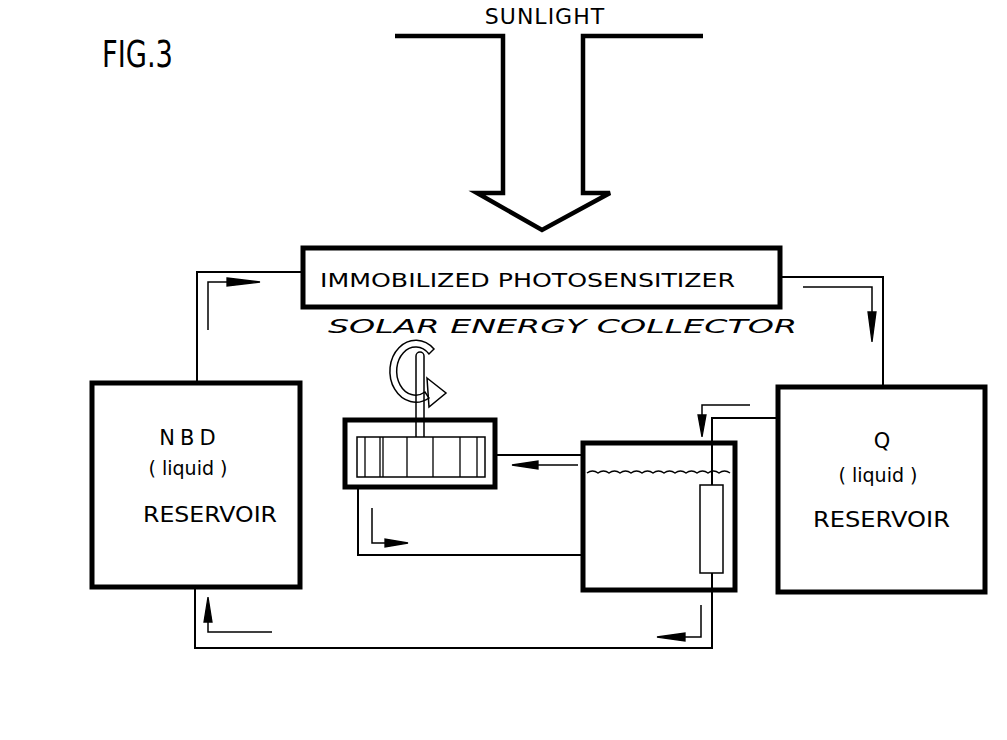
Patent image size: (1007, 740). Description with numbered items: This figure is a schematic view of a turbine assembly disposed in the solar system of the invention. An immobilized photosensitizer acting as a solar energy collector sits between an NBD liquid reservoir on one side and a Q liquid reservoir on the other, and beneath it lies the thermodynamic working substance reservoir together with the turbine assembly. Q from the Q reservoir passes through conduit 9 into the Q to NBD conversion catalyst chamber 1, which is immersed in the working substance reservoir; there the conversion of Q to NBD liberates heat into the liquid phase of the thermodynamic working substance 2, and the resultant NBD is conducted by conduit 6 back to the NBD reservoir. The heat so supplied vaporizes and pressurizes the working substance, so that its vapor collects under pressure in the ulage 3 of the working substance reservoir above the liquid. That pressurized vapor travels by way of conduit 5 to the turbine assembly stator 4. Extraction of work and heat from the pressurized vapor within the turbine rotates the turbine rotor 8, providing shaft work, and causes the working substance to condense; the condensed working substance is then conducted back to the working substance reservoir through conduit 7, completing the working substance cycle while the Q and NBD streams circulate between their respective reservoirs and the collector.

The Q to NBD conversion catalyst chamber 1 is at (763, 572).
The liquid phase of the thermodynamic working substance 2 is at (650, 540).
The ulage of the thermodynamic working substance reservoir 3 is at (664, 417).
The turbine assembly stator 4 is at (453, 423).
The conduit 5 is at (540, 432).
The conduit 6 is at (453, 652).
The conduit 7 is at (450, 548).
The turbine rotor 8 is at (437, 348).
The conduit 9 is at (771, 415).